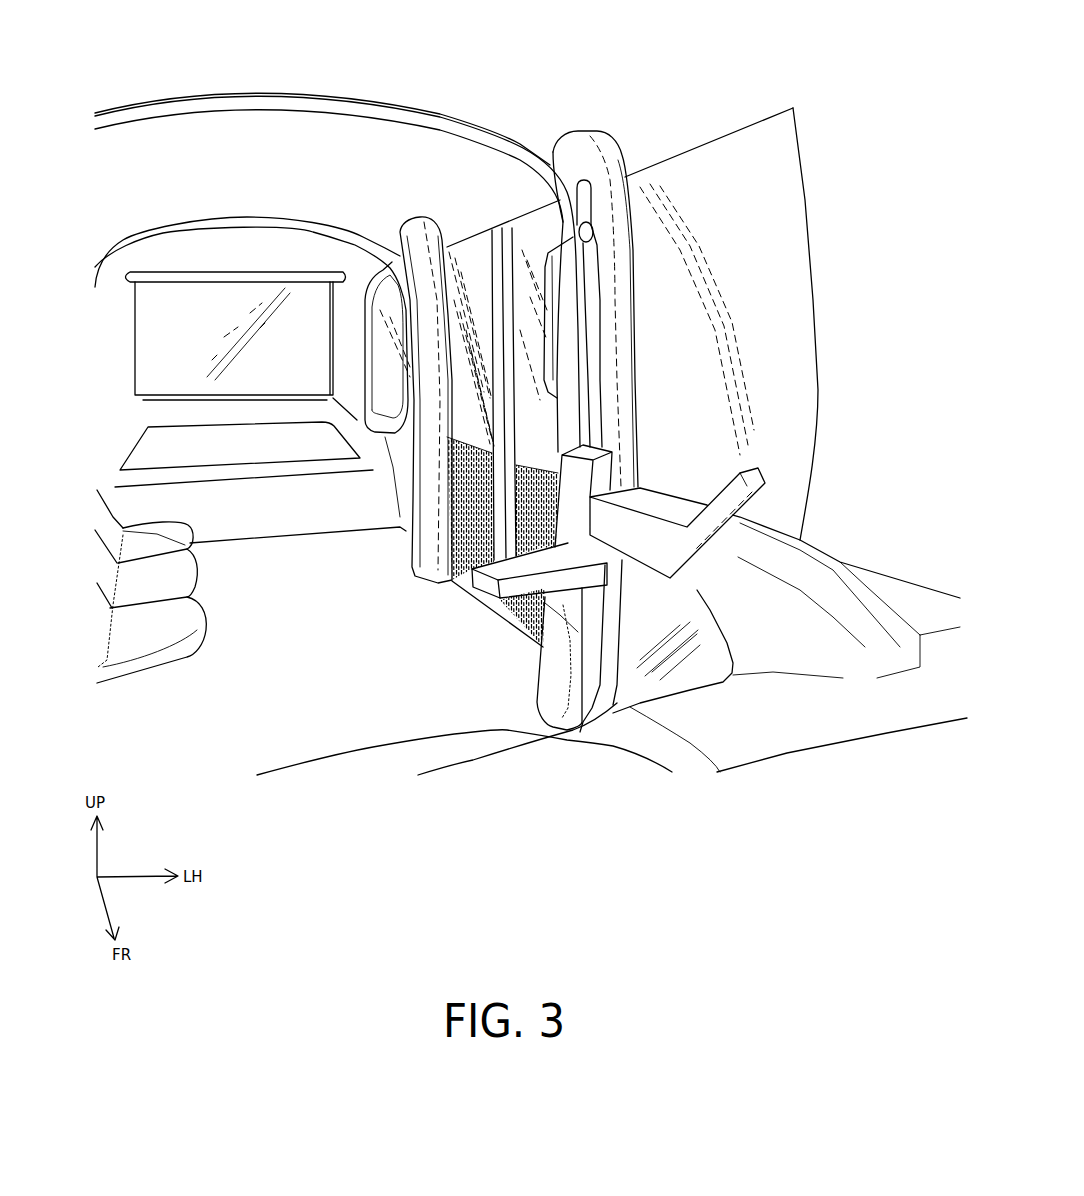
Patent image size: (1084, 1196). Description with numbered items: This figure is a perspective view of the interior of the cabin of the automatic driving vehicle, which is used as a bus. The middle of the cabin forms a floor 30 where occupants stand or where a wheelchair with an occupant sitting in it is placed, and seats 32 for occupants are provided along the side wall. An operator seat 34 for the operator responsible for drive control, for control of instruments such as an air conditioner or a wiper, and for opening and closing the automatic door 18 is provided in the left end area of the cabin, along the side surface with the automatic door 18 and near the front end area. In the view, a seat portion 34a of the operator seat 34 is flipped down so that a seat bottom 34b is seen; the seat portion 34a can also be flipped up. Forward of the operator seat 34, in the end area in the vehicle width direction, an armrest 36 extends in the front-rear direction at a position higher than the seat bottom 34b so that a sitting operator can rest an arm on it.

The automatic door 18 is at (487, 287).
The floor 30 is at (160, 703).
The seats 32 is at (217, 443).
The operator seat 34 is at (526, 642).
The seat portion 34a is at (520, 567).
The seat bottom 34b is at (500, 553).
The armrest 36 is at (663, 505).